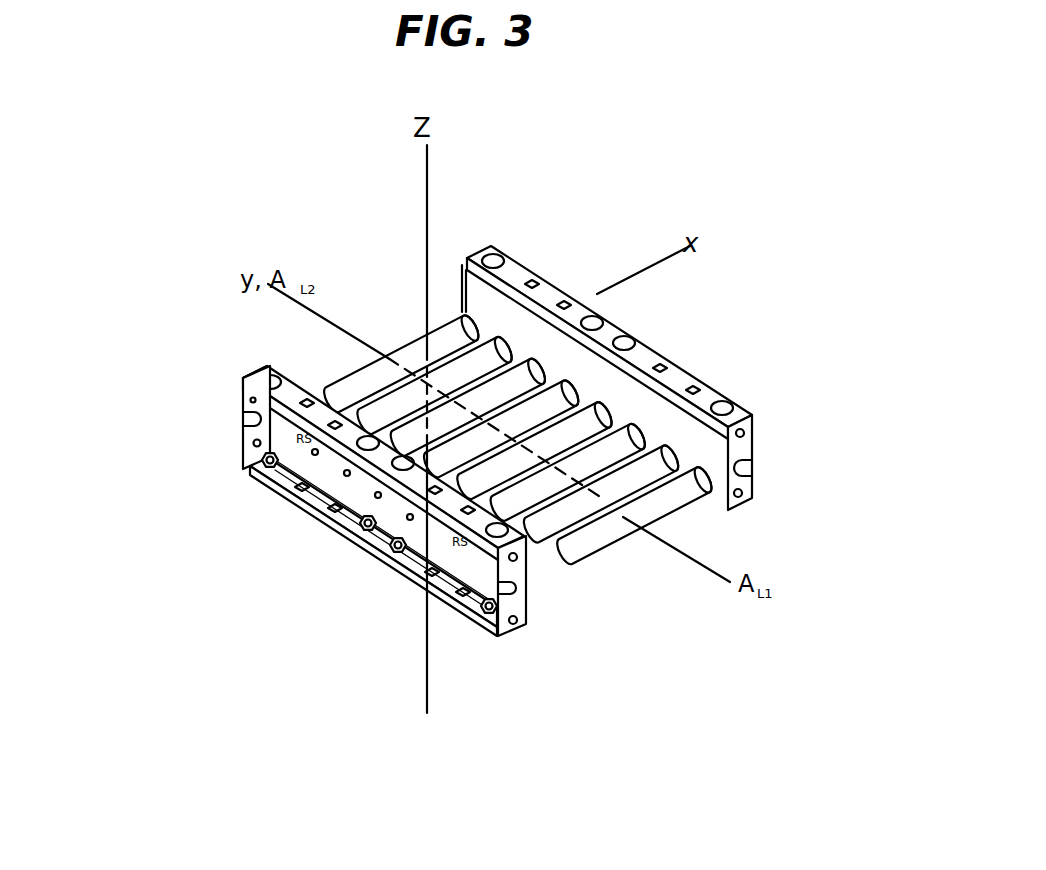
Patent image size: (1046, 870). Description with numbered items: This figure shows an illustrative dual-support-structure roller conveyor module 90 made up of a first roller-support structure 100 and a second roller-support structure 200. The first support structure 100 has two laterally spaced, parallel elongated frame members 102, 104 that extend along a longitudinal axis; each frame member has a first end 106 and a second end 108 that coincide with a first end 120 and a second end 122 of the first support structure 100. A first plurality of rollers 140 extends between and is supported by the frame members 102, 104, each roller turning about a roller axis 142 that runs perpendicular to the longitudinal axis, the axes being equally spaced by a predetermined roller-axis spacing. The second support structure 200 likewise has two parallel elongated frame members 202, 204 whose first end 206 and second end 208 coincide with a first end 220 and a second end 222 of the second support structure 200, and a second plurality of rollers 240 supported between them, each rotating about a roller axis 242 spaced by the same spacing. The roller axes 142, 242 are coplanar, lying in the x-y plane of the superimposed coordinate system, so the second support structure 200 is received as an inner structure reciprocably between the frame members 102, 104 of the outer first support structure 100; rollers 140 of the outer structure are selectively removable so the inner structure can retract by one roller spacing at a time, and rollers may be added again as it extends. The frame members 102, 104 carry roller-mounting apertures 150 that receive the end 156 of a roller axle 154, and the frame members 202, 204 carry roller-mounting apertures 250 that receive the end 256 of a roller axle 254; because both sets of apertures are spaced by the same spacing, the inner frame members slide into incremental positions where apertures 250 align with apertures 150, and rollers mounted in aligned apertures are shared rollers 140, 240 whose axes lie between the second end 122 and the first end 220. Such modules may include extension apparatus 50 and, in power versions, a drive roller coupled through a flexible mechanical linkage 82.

The extension apparatus 50 is at (247, 410).
The flexible mechanical linkage 82 is at (480, 497).
The roller conveyor module 90 is at (753, 324).
The first roller-support structure 100 is at (692, 376).
The first elongated frame member 102 is at (390, 503).
The second elongated frame member 104 is at (662, 357).
The first end 106 is at (727, 508).
The second end 108 is at (351, 551).
The first end of the first support structure 120 is at (693, 560).
The second end of the first support structure 122 is at (323, 507).
The roller 140 is at (568, 472).
The roller axis 142 is at (403, 522).
The roller-mounting aperture 150 is at (477, 557).
The roller axle 154 is at (387, 591).
The end of roller axle 156 is at (477, 557).
The second roller-support structure 200 is at (551, 285).
The first elongated frame member 202 is at (318, 478).
The second elongated frame member 204 is at (571, 298).
The first end 206 is at (684, 339).
The second end 208 is at (351, 271).
The first end of the second support structure 220 is at (645, 353).
The second end of the second support structure 222 is at (478, 257).
The roller 240 is at (435, 385).
The roller axis 242 is at (280, 462).
The roller-mounting aperture 250 is at (247, 444).
The roller axle 254 is at (232, 456).
The end of roller axle 256 is at (242, 433).